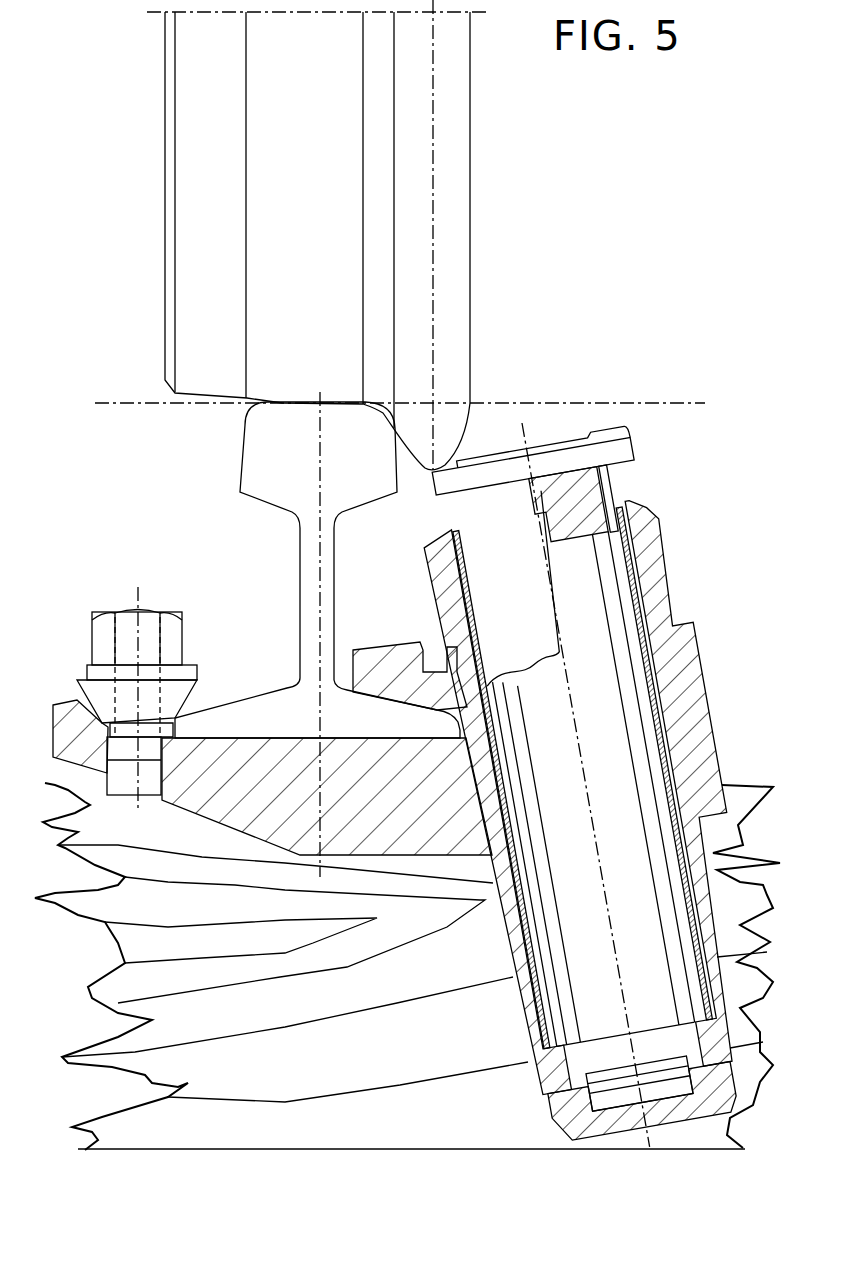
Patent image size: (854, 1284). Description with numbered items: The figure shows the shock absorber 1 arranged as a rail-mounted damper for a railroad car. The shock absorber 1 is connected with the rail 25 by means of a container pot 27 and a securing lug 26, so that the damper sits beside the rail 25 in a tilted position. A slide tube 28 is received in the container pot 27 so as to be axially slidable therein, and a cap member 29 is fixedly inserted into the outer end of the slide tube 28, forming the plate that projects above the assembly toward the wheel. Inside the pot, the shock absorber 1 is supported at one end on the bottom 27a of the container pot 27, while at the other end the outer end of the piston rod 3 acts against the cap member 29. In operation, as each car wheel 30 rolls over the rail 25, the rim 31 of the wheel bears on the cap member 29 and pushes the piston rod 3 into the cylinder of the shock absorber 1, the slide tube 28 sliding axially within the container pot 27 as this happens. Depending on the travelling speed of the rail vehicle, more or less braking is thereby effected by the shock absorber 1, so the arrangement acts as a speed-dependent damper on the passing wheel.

The shock absorber 1 is at (627, 713).
The piston rod 3 is at (612, 488).
The rail 25 is at (307, 573).
The securing lug 26 is at (257, 780).
The container pot 27 is at (650, 577).
The bottom of the container pot 27a is at (617, 1120).
The slide tube 28 is at (617, 550).
The cap member 29 is at (633, 455).
The car wheel 30 is at (282, 250).
The rim 31 is at (453, 172).